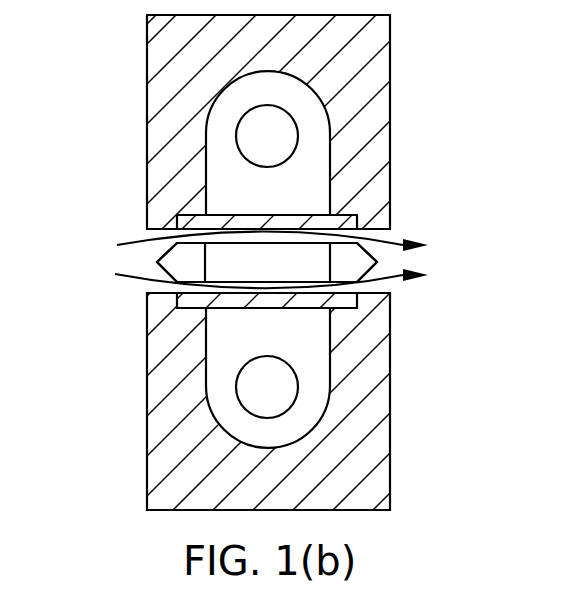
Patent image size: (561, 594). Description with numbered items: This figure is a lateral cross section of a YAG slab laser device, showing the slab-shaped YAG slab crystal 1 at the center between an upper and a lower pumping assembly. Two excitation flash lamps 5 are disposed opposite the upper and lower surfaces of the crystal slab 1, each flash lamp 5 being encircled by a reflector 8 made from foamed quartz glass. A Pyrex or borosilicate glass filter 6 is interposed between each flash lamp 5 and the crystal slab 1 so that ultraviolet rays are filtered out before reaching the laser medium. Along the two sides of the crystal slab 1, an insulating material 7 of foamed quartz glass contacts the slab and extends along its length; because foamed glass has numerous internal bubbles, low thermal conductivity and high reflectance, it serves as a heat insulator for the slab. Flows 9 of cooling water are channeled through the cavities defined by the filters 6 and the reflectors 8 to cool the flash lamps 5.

The YAG slab crystal 1 is at (230, 270).
The excitation flash lamps 5 is at (275, 125).
The Pyrex (borosilicate) glass filter 6 is at (343, 218).
The insulating material 7 is at (170, 250).
The reflector 8 is at (160, 58).
The flows of cooling water 9 is at (135, 243).